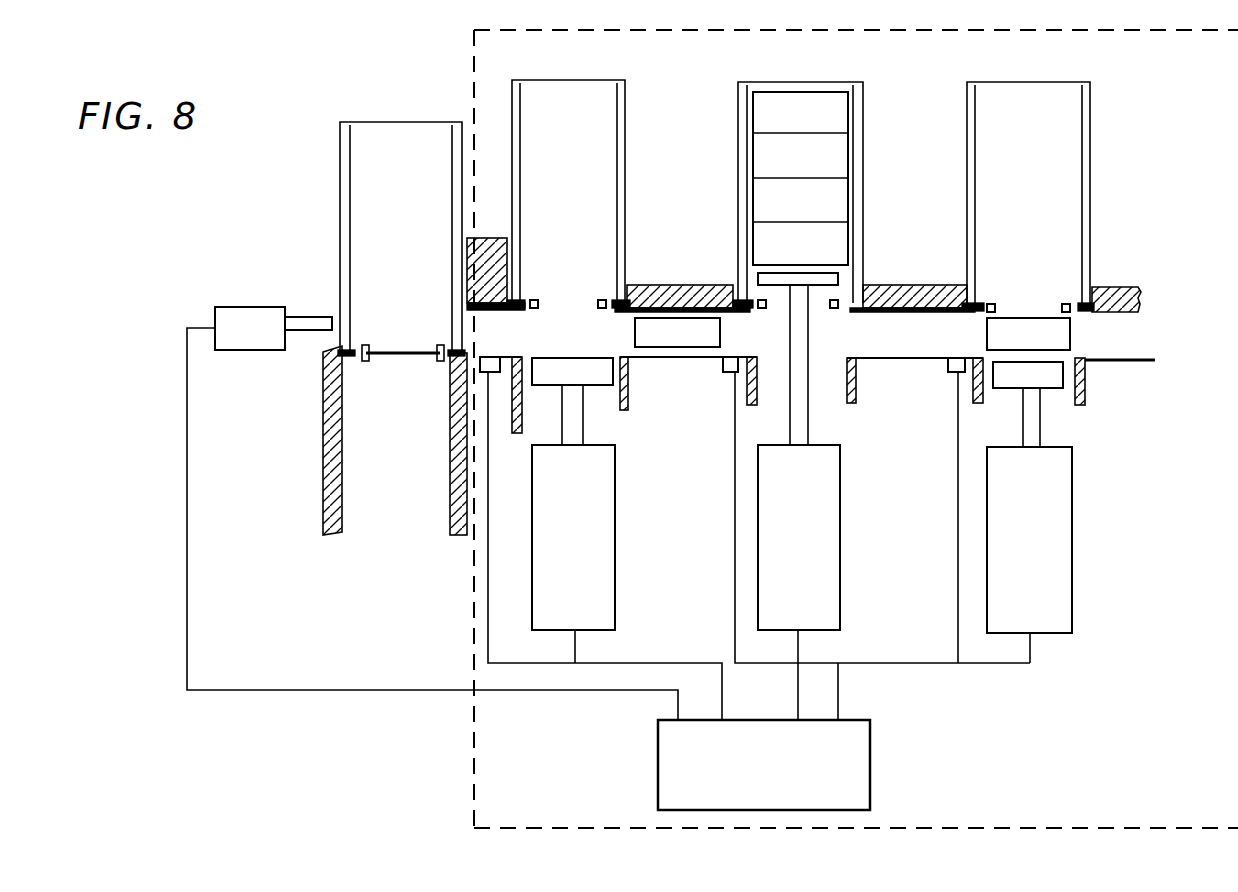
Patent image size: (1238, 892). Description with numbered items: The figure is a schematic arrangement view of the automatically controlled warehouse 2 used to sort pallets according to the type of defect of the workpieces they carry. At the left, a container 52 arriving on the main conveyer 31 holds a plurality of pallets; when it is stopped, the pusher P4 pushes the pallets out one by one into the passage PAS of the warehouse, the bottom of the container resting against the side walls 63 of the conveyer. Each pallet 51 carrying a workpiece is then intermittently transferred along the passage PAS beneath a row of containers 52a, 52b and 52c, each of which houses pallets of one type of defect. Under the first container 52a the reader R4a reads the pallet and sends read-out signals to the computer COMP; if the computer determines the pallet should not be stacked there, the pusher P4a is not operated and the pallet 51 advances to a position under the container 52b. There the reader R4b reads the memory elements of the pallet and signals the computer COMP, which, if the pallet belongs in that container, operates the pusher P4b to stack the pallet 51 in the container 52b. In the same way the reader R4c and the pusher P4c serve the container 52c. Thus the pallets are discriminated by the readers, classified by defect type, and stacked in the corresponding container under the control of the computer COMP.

The automatically controlled warehouse 2 is at (553, 57).
The main conveyer 31 is at (404, 335).
The pallet 51 is at (832, 119).
The container 52 is at (388, 150).
The container 52a is at (587, 98).
The container 52b is at (803, 92).
The container 52c is at (1022, 98).
The side walls 63 is at (323, 460).
The pusher P4 is at (258, 330).
The pusher P4a is at (585, 561).
The pusher P4b is at (813, 562).
The pusher P4c is at (1050, 562).
The reader R4a is at (491, 362).
The reader R4b is at (745, 362).
The reader R4c is at (958, 360).
The passage PAS is at (1076, 338).
The computer COMP is at (764, 765).